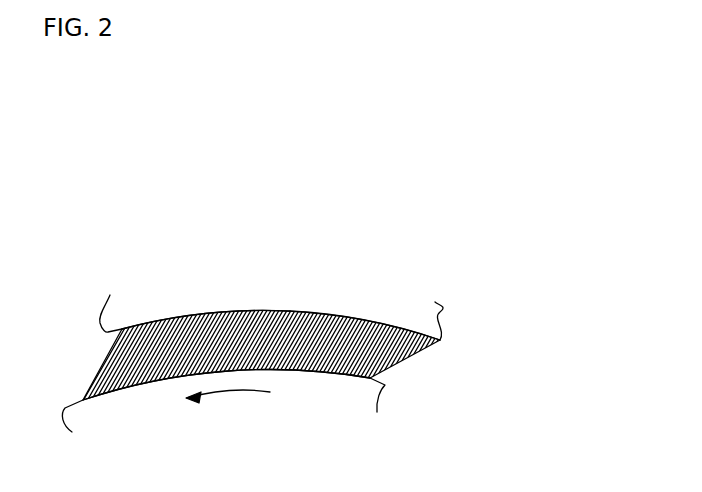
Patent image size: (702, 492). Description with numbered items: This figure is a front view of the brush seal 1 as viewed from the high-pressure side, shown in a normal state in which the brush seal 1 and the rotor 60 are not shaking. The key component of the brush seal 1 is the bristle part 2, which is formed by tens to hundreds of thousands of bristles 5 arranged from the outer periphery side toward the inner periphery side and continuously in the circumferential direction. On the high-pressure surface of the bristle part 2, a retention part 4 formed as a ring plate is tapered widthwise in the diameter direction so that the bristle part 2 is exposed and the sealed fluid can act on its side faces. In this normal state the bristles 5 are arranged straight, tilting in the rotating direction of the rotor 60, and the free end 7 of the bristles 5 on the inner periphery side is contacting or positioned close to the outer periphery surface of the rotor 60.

The brush seal device 1 is at (243, 248).
The bristle part 2 is at (210, 314).
The retention part 4 is at (303, 300).
The bristles 5 is at (390, 352).
The free end 7 is at (136, 386).
The rotor 60 is at (258, 435).